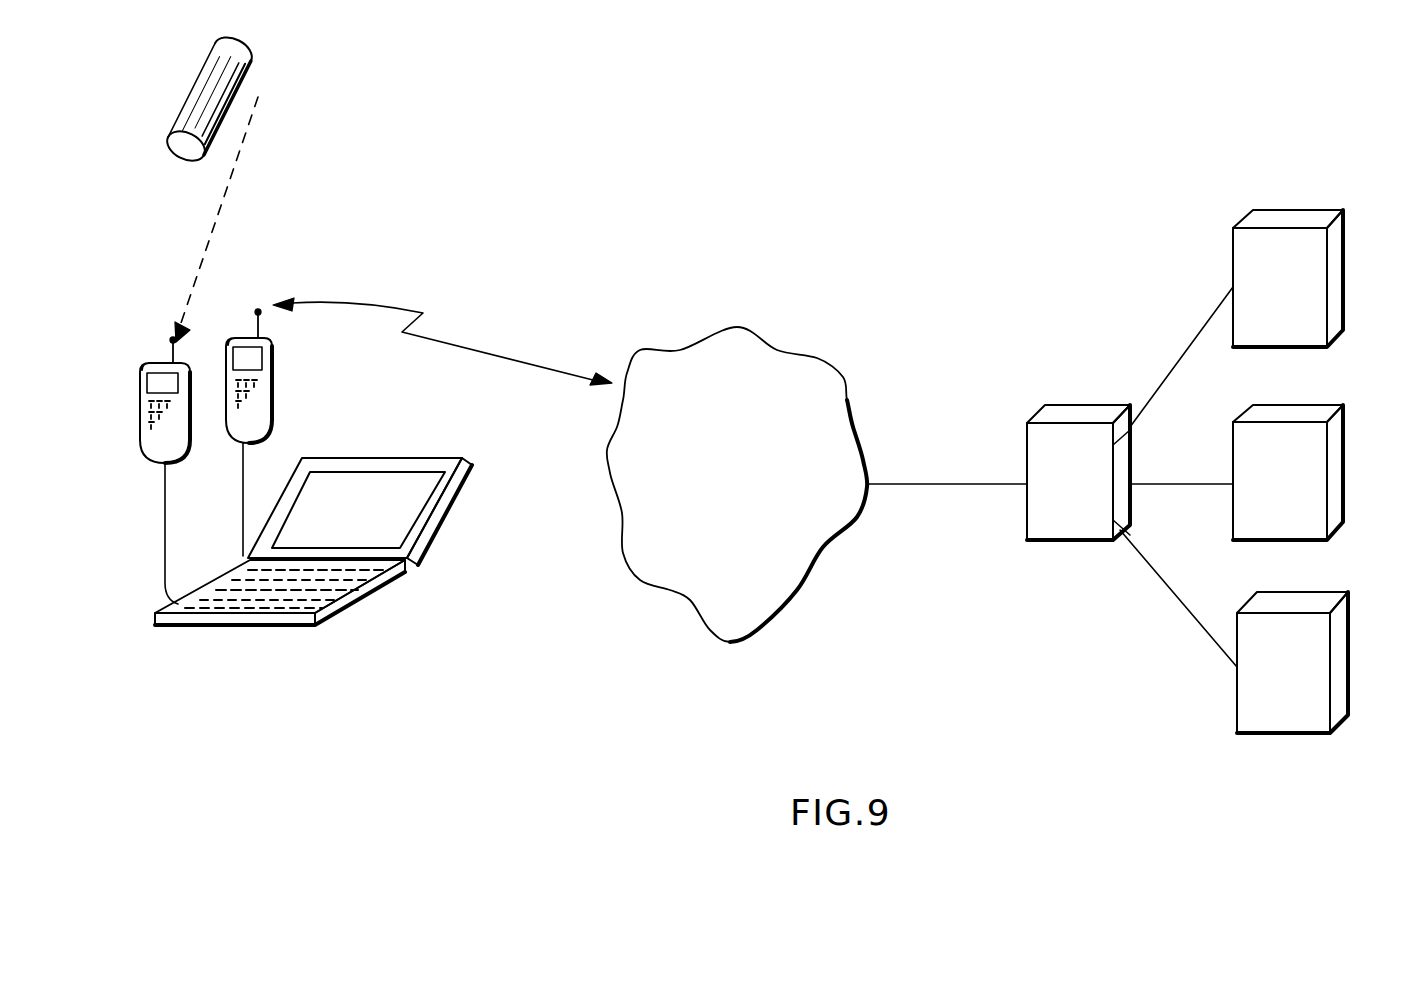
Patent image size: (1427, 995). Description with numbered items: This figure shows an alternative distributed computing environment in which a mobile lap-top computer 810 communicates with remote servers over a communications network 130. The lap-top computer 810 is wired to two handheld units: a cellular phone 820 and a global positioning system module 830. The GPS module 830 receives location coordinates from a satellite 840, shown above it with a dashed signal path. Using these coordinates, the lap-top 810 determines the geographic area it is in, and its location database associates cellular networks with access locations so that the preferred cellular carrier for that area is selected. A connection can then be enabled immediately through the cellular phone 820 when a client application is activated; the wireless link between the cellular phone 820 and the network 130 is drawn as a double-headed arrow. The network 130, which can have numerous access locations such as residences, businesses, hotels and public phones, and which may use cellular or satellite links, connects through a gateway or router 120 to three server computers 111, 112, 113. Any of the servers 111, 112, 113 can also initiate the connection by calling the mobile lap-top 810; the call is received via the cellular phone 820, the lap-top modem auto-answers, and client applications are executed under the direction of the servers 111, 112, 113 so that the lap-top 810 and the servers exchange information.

The server computer 111 is at (1335, 283).
The server computer 112 is at (1335, 470).
The server computer 113 is at (1338, 662).
The gateway or router 120 is at (1090, 408).
The communications network 130 is at (818, 358).
The portable computer 810 is at (358, 605).
The wireless handheld device 820 is at (272, 367).
The handheld device 830 is at (155, 363).
The pointing device 840 is at (258, 73).